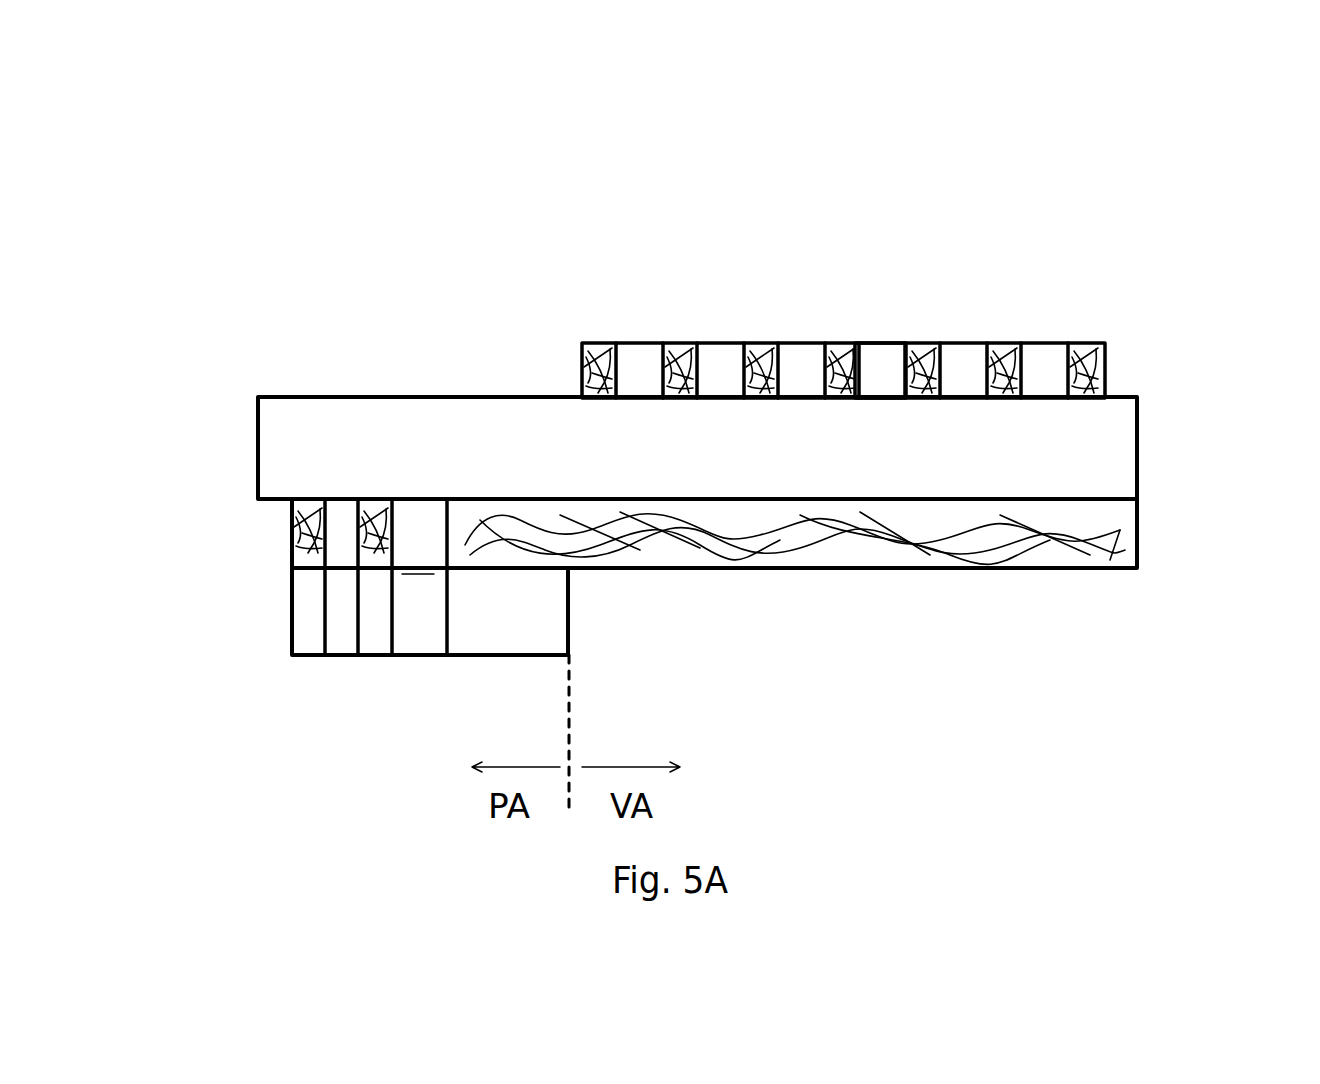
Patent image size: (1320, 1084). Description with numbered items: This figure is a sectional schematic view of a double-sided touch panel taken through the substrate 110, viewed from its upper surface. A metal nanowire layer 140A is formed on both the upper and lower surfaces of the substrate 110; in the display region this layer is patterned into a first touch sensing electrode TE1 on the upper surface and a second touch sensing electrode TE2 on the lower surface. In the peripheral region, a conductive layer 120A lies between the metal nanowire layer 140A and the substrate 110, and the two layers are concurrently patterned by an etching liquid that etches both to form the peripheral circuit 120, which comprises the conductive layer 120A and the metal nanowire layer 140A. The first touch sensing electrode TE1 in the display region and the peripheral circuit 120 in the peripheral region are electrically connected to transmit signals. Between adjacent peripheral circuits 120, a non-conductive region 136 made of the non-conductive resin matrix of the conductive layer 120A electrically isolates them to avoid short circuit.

The substrate 110 is at (360, 468).
The peripheral circuit 120 is at (510, 658).
The conductive layer 120A is at (303, 594).
The non-conductive region 136 is at (877, 360).
The metal nanowire layer 140A is at (1105, 356).
The first touch sensing electrode TE1 is at (578, 366).
The second touch sensing electrode TE2 is at (1005, 582).